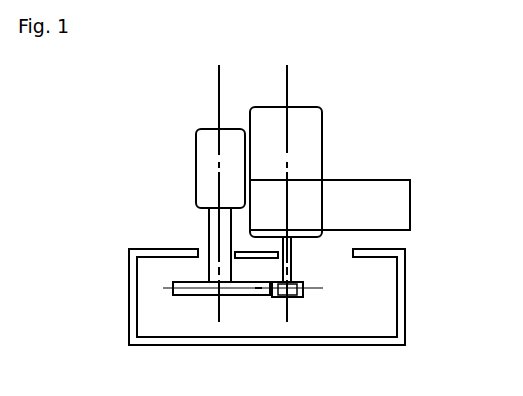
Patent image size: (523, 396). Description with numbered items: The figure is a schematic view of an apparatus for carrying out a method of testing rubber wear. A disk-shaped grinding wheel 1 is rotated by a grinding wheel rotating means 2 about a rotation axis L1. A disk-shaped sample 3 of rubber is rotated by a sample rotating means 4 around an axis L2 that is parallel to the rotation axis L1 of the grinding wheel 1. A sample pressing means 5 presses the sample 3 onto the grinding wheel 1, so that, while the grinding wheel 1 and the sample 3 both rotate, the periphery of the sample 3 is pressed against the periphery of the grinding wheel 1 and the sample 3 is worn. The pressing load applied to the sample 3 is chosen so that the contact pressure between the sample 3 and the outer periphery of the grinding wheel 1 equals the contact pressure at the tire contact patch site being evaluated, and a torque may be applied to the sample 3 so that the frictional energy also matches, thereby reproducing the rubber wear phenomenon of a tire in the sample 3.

The grinding wheel 1 is at (186, 296).
The grinding wheel rotating means 2 is at (196, 182).
The sample 3 is at (303, 296).
The sample rotating means 4 is at (322, 147).
The sample pressing means 5 is at (410, 197).
The rotation axis of the grinding wheel L1 is at (219, 90).
The axis of the sample L2 is at (287, 90).